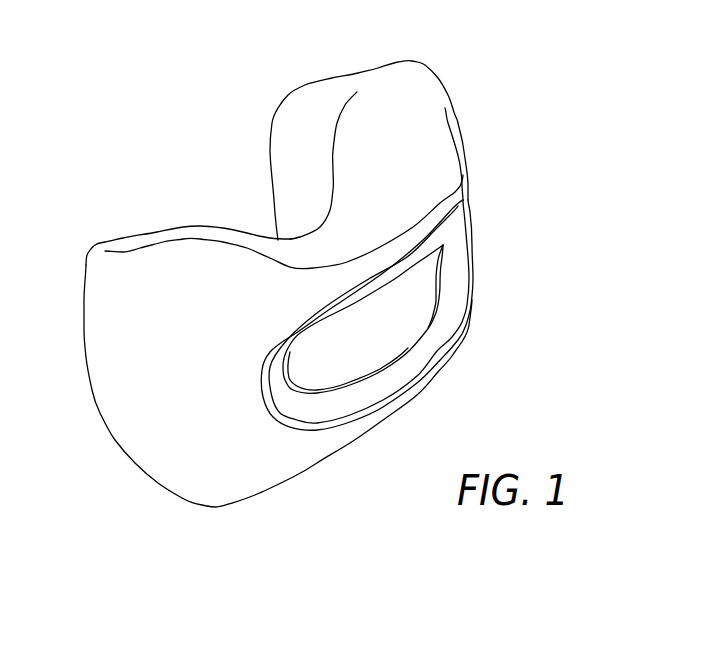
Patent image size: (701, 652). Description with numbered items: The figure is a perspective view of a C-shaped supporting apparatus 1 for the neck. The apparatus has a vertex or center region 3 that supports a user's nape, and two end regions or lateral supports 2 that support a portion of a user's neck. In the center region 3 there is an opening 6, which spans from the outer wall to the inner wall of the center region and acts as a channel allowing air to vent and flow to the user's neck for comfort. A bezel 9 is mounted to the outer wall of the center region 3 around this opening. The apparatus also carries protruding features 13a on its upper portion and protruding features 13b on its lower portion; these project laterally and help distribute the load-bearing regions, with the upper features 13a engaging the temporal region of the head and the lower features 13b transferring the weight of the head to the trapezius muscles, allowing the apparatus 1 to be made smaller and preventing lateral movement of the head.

The supporting apparatus 1 is at (565, 128).
The lateral supports 2 is at (254, 158).
The center region 3 is at (393, 213).
The opening 6 is at (385, 333).
The bezel 9 is at (478, 292).
The protruding features 13a is at (387, 104).
The protruding features 13b is at (207, 497).